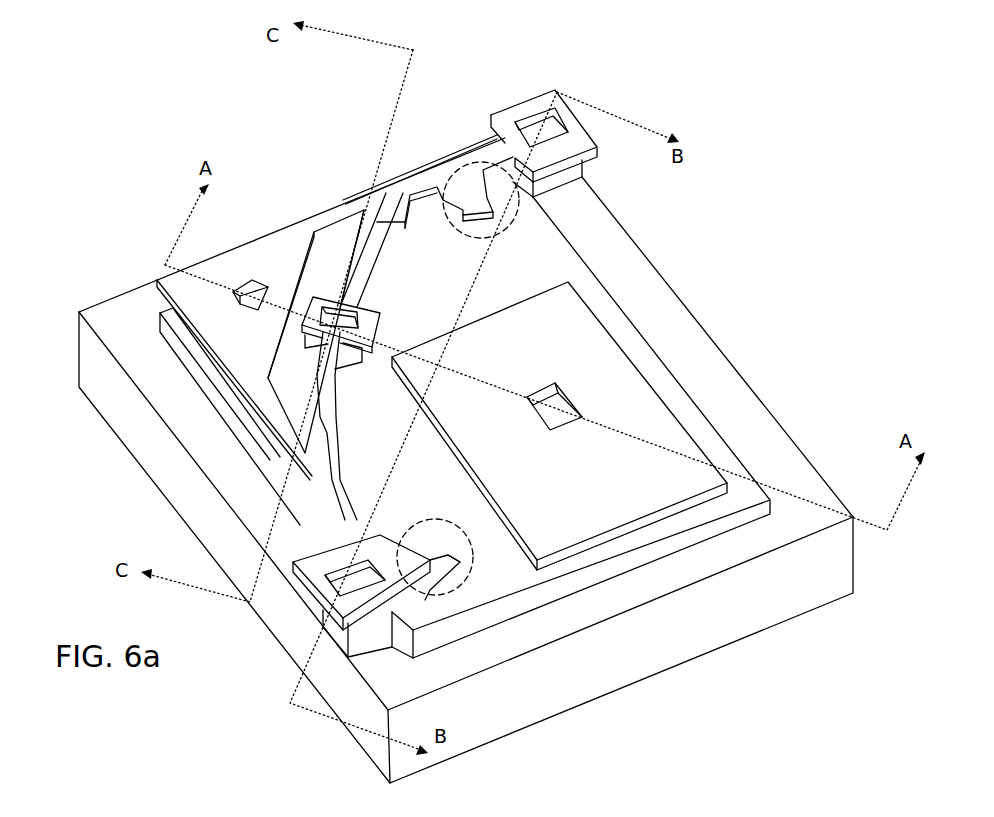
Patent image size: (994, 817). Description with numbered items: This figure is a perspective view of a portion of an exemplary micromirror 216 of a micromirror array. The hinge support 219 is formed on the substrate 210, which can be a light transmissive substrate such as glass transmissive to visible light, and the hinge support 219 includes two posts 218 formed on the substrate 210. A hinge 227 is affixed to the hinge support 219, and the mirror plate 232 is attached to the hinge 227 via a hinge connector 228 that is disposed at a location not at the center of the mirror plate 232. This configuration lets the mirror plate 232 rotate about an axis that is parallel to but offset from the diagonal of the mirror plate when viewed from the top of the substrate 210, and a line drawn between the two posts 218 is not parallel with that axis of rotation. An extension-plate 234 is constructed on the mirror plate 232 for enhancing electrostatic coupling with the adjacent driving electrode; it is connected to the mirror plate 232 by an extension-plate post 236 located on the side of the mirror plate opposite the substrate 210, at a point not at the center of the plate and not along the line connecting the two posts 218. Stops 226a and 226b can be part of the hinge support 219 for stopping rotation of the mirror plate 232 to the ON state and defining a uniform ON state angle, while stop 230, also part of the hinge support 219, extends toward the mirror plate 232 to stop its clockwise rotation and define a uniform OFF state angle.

The substrate 210 is at (735, 620).
The microactuator assembly 216 is at (108, 167).
The posts 218 is at (543, 127).
The hinge support 219 is at (350, 202).
The stop 226a is at (478, 198).
The stop 226b is at (437, 521).
The hinge 227 is at (373, 265).
The hinge connector 228 is at (382, 313).
The stop 230 is at (250, 293).
The mirror plate 232 is at (624, 311).
The extension-plate 234 is at (663, 397).
The extension-plate post 236 is at (558, 431).